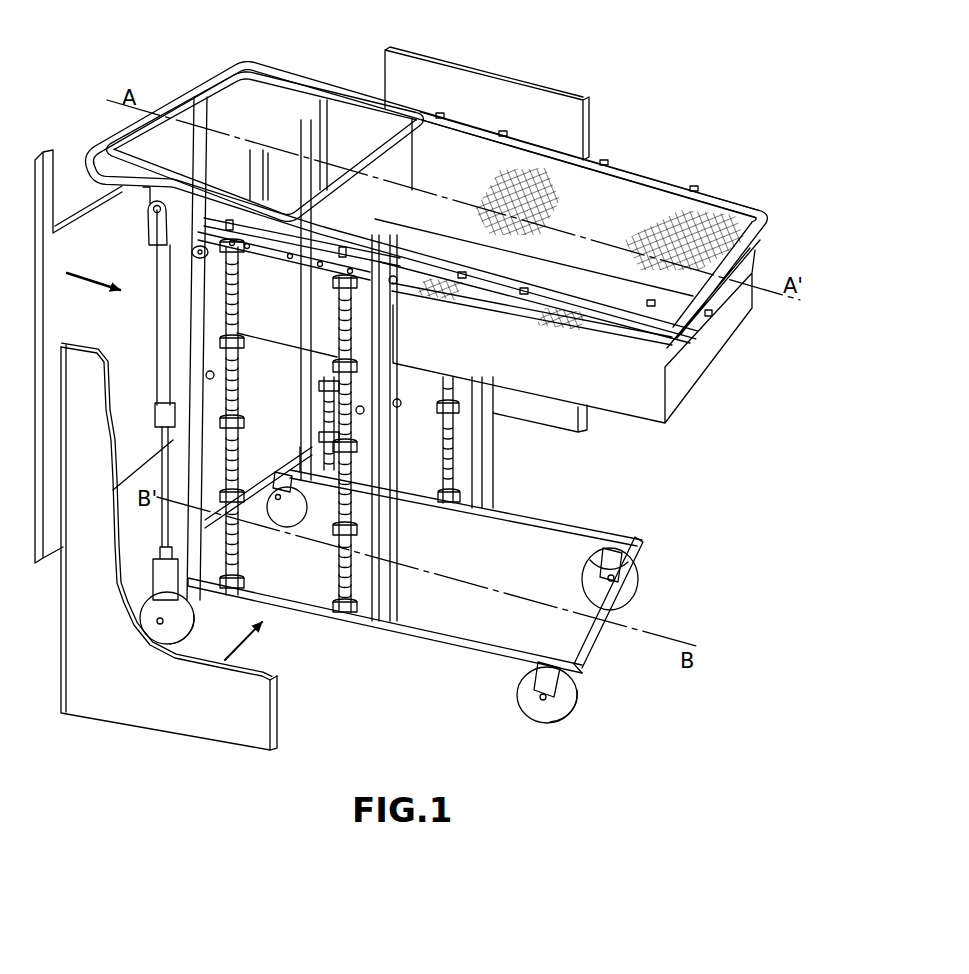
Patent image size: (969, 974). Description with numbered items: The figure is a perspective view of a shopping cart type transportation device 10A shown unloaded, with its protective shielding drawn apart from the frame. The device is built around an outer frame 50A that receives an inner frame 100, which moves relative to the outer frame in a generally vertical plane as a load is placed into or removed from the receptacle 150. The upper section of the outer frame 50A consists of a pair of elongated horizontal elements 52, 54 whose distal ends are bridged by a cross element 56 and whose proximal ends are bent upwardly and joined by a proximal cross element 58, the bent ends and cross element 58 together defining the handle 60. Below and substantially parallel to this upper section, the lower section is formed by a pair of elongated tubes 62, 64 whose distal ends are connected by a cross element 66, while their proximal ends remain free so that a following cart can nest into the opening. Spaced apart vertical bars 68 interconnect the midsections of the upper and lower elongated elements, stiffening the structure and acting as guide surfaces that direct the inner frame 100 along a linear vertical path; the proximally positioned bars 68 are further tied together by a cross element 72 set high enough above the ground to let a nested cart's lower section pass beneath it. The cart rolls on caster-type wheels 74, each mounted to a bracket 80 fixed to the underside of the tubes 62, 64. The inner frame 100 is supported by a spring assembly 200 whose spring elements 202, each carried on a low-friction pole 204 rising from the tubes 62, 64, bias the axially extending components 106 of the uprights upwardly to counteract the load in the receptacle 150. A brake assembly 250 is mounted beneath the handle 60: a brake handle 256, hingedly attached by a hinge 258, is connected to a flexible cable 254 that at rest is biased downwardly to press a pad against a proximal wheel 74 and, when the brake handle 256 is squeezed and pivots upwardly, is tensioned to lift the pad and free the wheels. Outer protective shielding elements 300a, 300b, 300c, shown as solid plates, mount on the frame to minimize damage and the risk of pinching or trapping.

The transportation device 10A is at (698, 138).
The outer frame 50A is at (520, 230).
The elongated horizontal element 52 is at (523, 303).
The elongated horizontal element 54 is at (610, 166).
The cross element 56 is at (760, 229).
The proximal cross element 58 is at (177, 97).
The handle 60 is at (285, 62).
The elongated element of lower section 62 is at (434, 643).
The elongated element of lower section 64 is at (578, 528).
The cross element 66 is at (600, 640).
The bars 68 is at (197, 590).
The cross element 72 is at (263, 480).
The wheels 74 is at (522, 693).
The bracket 80 is at (617, 560).
The inner frame 100 is at (260, 267).
The axially extending component 106 is at (312, 258).
The receptacle 150 is at (672, 432).
The spring assembly 200 is at (257, 586).
The spring elements 202 is at (350, 620).
The pole 204 is at (227, 453).
The brake assembly 250 is at (147, 393).
The flexible cable 254 is at (163, 387).
The brake handle 256 is at (84, 168).
The hinge 258 is at (147, 203).
The outer protective shielding element 300a is at (127, 331).
The outer protective shielding element 300b is at (540, 98).
The outer protective shielding element 300c is at (177, 706).